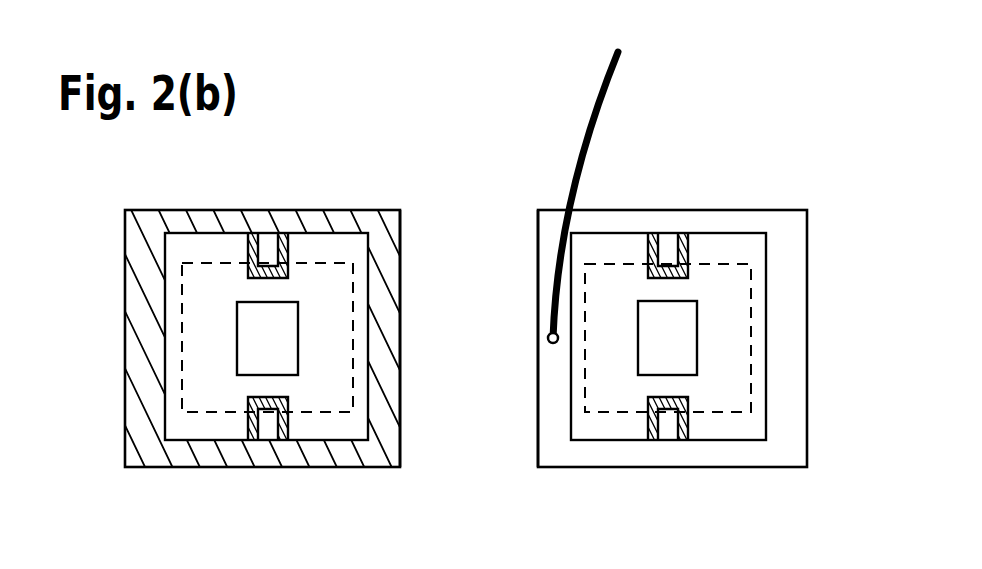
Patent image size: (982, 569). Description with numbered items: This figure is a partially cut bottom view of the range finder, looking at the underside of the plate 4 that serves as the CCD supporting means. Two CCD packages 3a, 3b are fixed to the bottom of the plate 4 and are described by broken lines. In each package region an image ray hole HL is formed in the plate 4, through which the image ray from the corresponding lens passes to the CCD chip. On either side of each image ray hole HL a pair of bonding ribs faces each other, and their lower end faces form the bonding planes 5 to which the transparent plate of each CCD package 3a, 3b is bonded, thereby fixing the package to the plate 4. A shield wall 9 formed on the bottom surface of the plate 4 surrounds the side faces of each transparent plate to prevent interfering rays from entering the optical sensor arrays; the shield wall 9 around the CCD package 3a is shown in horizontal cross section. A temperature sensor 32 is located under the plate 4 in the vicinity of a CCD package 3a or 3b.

The CCD package 3a is at (316, 387).
The CCD package 3b is at (607, 378).
The plate 4 is at (470, 448).
The bonding planes 5 is at (248, 403).
The shield wall 9 is at (281, 220).
The temperature sensor 32 is at (547, 333).
The image ray hole HL is at (676, 347).